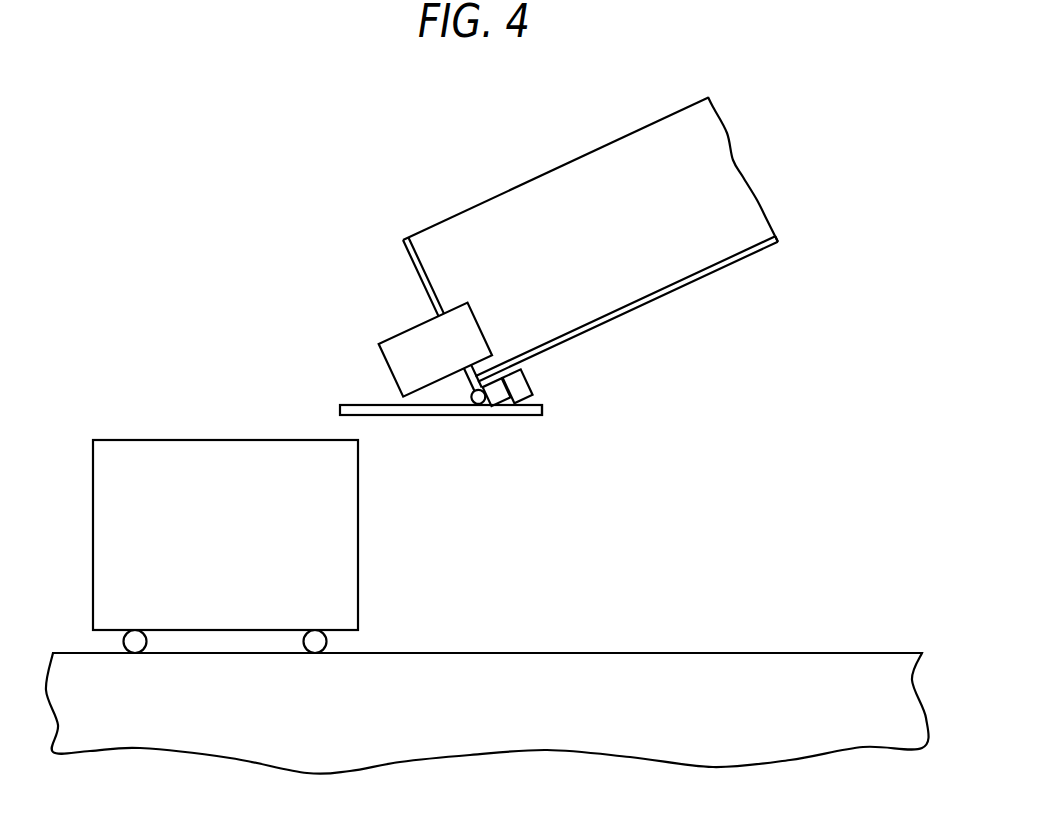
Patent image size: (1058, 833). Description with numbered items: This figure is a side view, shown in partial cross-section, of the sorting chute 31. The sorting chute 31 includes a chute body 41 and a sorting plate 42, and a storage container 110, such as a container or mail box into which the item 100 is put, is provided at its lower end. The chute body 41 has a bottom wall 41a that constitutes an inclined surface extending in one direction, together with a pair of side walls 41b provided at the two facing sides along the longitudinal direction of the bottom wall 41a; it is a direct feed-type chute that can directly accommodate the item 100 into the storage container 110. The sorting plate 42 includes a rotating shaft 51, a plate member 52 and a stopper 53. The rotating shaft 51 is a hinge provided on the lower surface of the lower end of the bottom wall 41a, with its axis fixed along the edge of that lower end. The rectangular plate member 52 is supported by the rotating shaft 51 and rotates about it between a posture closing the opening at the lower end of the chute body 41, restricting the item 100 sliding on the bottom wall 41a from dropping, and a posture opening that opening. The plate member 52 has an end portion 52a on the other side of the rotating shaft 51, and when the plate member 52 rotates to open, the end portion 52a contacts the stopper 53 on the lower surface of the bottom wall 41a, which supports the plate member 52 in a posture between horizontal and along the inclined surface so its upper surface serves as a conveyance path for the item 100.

The sorting chute 31 is at (777, 118).
The chute body 41 is at (777, 182).
The bottom wall 41a is at (626, 308).
The side walls 41b is at (573, 207).
The sorting plate 42 is at (459, 477).
The rotating shaft 51 is at (478, 407).
The plate member 52 is at (410, 416).
The end portion 52a is at (533, 415).
The stopper 53 is at (530, 383).
The item 100 is at (390, 372).
The storage container 110 is at (93, 479).